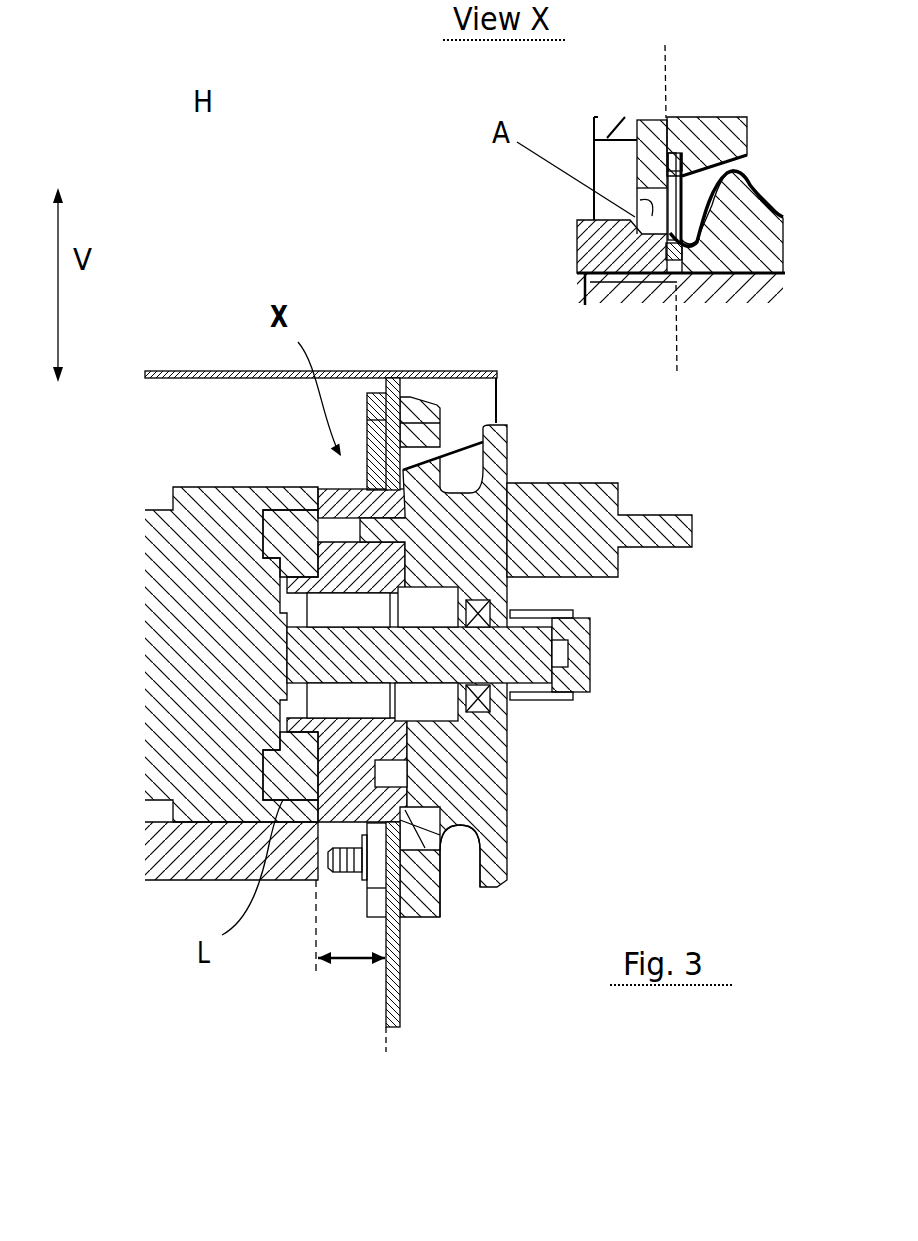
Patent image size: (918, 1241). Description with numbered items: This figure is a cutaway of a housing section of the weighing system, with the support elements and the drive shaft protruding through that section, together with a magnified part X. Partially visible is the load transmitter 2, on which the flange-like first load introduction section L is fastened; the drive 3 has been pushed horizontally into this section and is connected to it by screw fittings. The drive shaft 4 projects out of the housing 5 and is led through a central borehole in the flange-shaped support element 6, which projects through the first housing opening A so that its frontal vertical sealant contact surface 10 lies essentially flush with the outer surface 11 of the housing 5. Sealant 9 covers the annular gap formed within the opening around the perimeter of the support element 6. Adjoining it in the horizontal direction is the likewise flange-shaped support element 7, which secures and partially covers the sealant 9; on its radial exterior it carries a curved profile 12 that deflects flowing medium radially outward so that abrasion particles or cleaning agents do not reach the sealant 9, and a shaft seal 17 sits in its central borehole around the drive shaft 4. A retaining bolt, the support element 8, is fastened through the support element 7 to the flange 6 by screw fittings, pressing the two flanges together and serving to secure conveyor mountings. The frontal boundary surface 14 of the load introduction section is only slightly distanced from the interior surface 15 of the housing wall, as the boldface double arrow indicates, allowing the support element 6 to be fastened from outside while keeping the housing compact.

The load transmitter 2 is at (167, 862).
The drive 3 is at (192, 643).
The drive shaft 4 is at (547, 653).
The housing 5 is at (177, 375).
The support element 6 is at (337, 500).
The support element 7 is at (500, 827).
The support element 8 is at (587, 497).
The sealant 9 is at (694, 197).
The sealant contact surface 10 is at (679, 338).
The outer surface 11 is at (667, 90).
The curved profile 12 is at (467, 890).
The frontal boundary surface 14 is at (317, 935).
The interior surface 15 is at (385, 1040).
The shaft seal 17 is at (480, 700).